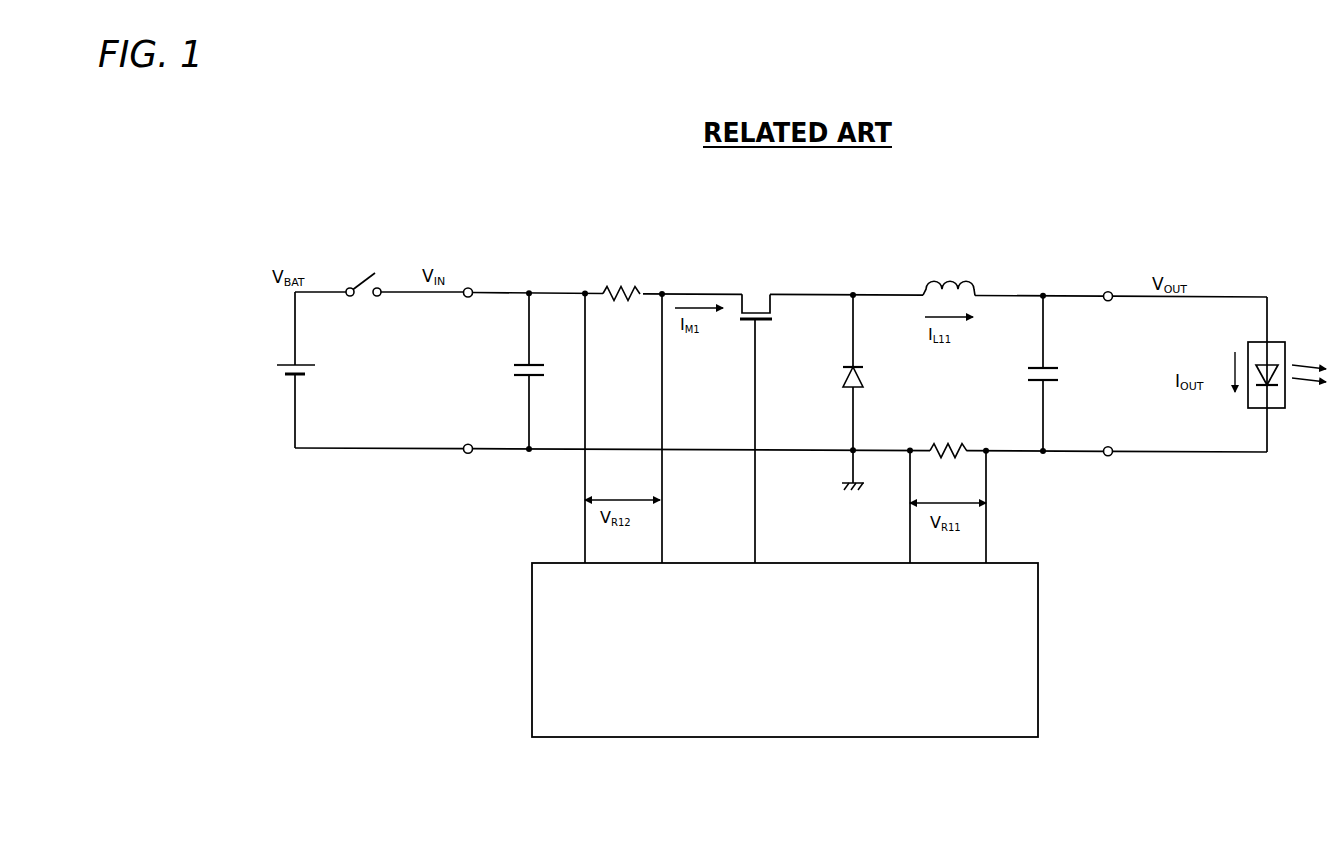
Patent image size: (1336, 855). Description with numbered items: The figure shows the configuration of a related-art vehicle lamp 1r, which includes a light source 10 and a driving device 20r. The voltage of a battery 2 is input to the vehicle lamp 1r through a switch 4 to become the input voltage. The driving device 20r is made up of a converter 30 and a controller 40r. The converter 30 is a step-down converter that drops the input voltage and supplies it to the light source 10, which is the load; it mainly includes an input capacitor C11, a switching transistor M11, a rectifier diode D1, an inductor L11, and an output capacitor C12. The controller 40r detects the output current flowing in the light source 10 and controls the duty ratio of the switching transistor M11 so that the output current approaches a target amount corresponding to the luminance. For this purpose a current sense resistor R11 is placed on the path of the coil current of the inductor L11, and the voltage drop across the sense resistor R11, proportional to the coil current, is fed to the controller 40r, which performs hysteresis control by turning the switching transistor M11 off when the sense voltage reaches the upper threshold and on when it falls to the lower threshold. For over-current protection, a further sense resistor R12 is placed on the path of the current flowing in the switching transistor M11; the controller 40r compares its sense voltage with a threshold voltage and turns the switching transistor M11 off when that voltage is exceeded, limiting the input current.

The vehicle lamp 1r is at (1197, 198).
The battery 2 is at (278, 372).
The switch 4 is at (358, 274).
The light source 10 is at (1276, 342).
The driving device 20r is at (1065, 816).
The converter 30 is at (526, 475).
The controller 40r is at (785, 740).
The input capacitor C11 is at (513, 372).
The output capacitor C12 is at (1060, 372).
The sense resistor R12 is at (628, 289).
The current sense resistor R11 is at (952, 441).
The switching transistor M11 is at (750, 291).
The rectifier diode D1 is at (838, 378).
The inductor L11 is at (950, 286).